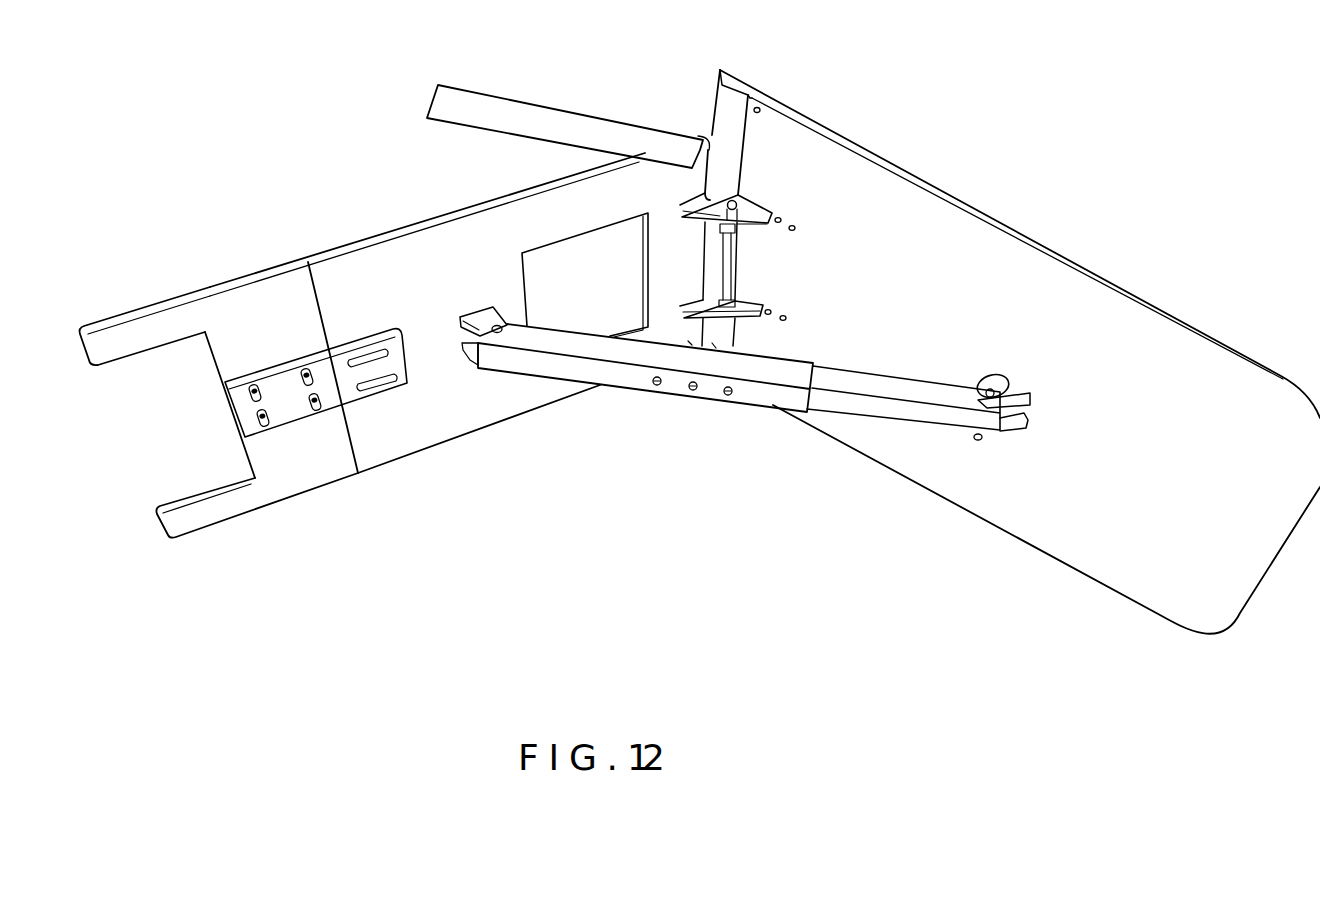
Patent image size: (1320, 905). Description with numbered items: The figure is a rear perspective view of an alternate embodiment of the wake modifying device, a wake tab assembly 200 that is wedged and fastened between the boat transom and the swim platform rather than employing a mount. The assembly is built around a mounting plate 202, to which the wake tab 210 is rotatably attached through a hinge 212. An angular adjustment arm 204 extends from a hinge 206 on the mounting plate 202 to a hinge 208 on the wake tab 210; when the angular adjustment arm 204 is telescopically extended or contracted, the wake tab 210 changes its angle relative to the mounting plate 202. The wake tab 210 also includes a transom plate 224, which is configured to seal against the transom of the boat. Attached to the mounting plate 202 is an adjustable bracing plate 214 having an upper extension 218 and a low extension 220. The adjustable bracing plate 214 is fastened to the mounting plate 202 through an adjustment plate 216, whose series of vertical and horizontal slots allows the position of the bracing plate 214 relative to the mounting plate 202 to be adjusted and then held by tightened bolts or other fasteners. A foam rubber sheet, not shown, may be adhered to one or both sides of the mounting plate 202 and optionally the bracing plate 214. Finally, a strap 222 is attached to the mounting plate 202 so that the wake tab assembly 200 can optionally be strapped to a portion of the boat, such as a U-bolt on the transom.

The wake tab assembly 200 is at (1029, 110).
The mounting plate 202 is at (505, 254).
The angular adjustment arm 204 is at (768, 407).
The hinge 206 is at (473, 358).
The hinge 208 is at (1014, 400).
The wake tab 210 is at (1230, 401).
The hinge 212 is at (737, 203).
The adjustable bracing plate 214 is at (288, 328).
The adjustment plate 216 is at (347, 345).
The upper extension 218 is at (140, 313).
The low extension 220 is at (208, 525).
The strap 222 is at (533, 105).
The transom plate 224 is at (740, 72).